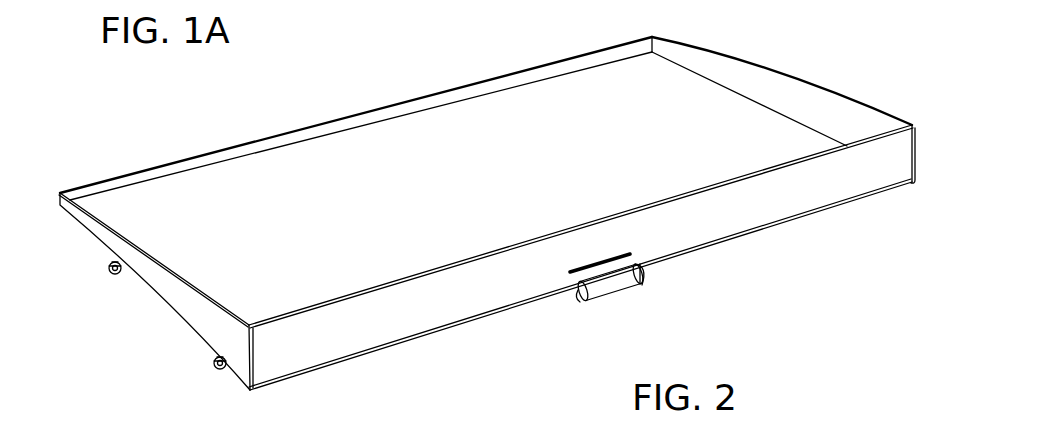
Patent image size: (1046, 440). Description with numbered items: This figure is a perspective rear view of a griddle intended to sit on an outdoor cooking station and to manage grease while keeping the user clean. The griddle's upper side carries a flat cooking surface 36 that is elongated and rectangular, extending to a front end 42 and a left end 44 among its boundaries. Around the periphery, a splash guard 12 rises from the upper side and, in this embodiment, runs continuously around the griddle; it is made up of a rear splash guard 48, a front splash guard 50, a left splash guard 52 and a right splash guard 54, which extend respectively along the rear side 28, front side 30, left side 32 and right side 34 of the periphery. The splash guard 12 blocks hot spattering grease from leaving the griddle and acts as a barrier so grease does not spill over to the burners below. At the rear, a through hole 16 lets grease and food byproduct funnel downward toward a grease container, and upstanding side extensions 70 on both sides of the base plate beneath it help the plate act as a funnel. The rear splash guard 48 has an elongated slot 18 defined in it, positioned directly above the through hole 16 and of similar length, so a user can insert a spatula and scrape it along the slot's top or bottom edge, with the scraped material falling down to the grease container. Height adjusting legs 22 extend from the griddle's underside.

The splash guard 12 is at (464, 195).
The through hole 16 is at (592, 298).
The elongated slot 18 is at (615, 257).
The height adjusting legs 22 is at (99, 290).
The rear side 28 is at (581, 257).
The front side 30 is at (356, 100).
The left side 32 is at (787, 91).
The right side 34 is at (127, 291).
The flat cooking surface 36 is at (260, 182).
The front end 42 is at (520, 95).
The left end 44 is at (703, 83).
The rear splash guard 48 is at (827, 180).
The front splash guard 50 is at (302, 135).
The left splash guard 52 is at (763, 80).
The right splash guard 54 is at (190, 280).
The upstanding side extensions 70 is at (633, 268).